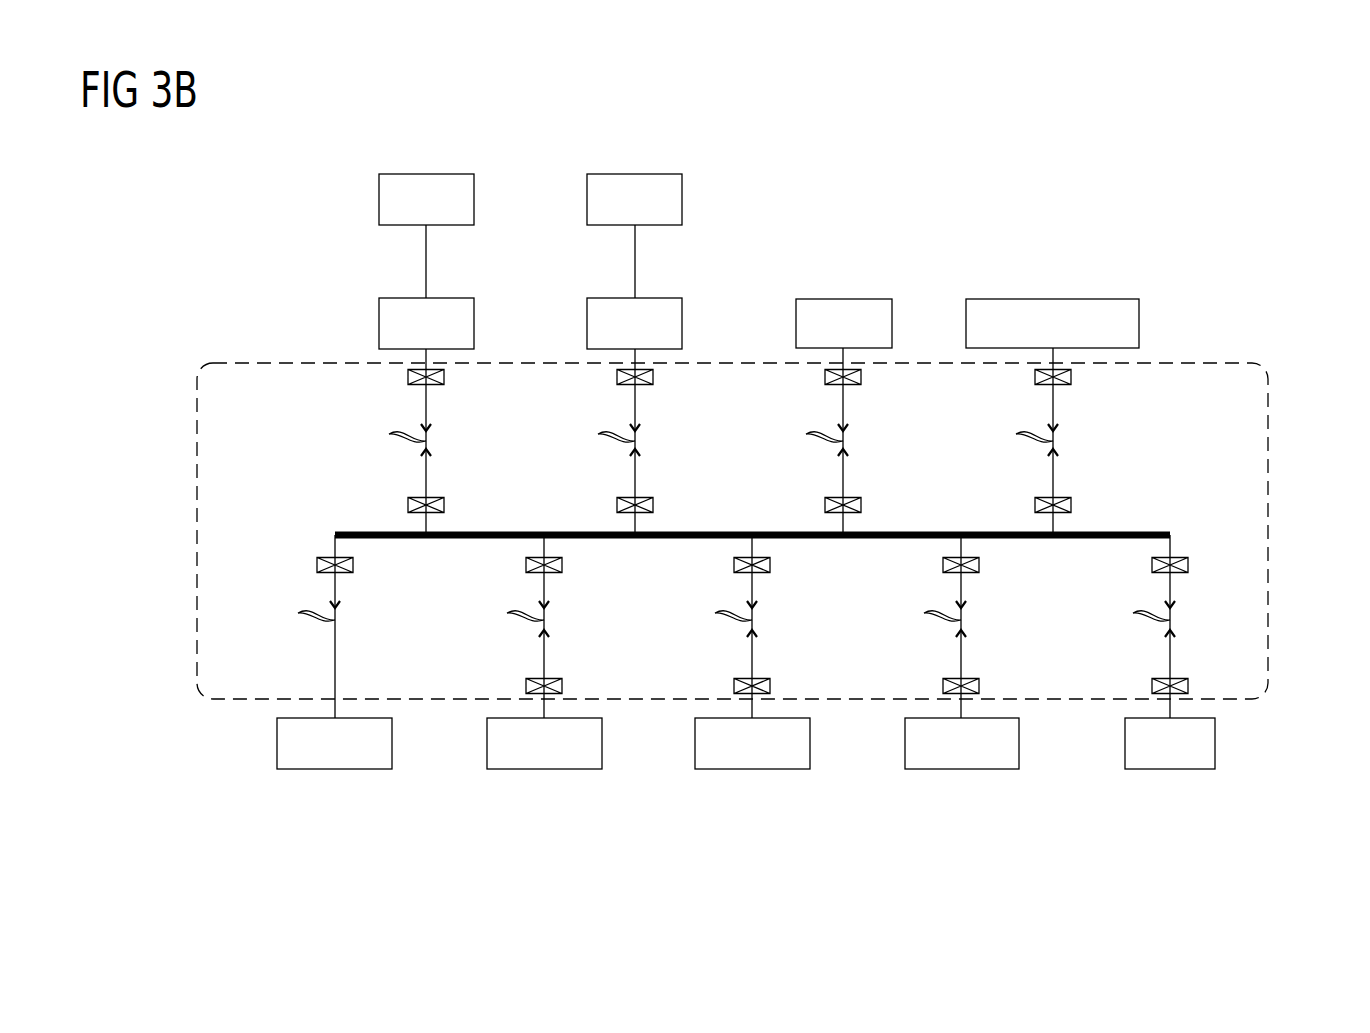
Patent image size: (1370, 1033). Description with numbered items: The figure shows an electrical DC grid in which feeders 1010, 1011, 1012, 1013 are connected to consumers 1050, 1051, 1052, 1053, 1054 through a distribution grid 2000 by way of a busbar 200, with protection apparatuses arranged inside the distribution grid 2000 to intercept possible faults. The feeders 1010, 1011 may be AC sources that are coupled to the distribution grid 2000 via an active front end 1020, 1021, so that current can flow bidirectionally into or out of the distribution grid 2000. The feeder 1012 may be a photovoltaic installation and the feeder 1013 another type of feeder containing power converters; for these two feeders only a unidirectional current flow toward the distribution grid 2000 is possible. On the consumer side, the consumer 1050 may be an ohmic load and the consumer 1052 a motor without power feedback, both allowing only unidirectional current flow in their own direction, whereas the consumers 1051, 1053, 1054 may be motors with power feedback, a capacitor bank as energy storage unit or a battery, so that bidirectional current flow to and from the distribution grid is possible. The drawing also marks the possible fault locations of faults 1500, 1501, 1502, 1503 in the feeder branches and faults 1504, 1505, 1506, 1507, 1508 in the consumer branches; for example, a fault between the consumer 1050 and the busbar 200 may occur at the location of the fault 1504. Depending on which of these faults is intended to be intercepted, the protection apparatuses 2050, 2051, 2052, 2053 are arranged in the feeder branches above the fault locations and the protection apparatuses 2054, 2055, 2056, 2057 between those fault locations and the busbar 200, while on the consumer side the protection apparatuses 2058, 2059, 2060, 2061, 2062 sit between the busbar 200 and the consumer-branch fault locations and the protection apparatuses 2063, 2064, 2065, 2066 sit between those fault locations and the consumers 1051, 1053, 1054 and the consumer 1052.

The feeder 1010 is at (456, 174).
The feeder 1011 is at (665, 174).
The feeder 1012 is at (874, 298).
The feeder 1013 is at (1107, 298).
The active front end 1020 is at (456, 298).
The active front end 1021 is at (665, 298).
The consumer 1050 is at (336, 770).
The consumer 1051 is at (545, 770).
The consumer 1052 is at (753, 770).
The consumer 1053 is at (962, 770).
The consumer 1054 is at (1171, 770).
The fault 1500 is at (376, 442).
The fault 1501 is at (585, 442).
The fault 1502 is at (793, 442).
The fault 1503 is at (1003, 442).
The fault 1504 is at (306, 633).
The fault 1505 is at (515, 633).
The fault 1506 is at (723, 633).
The fault 1507 is at (932, 633).
The fault 1508 is at (1141, 633).
The busbar 200 is at (1152, 532).
The distribution grid 2000 is at (1268, 447).
The protection apparatus 2050 is at (408, 375).
The protection apparatus 2051 is at (617, 375).
The protection apparatus 2052 is at (825, 375).
The protection apparatus 2053 is at (1035, 375).
The protection apparatus 2054 is at (408, 507).
The protection apparatus 2055 is at (617, 507).
The protection apparatus 2056 is at (825, 500).
The protection apparatus 2057 is at (1035, 500).
The protection apparatus 2058 is at (317, 566).
The protection apparatus 2059 is at (526, 566).
The protection apparatus 2060 is at (734, 566).
The protection apparatus 2061 is at (943, 566).
The protection apparatus 2062 is at (1152, 566).
The protection apparatus 2063 is at (526, 688).
The protection apparatus 2064 is at (734, 688).
The protection apparatus 2065 is at (943, 688).
The protection apparatus 2066 is at (1152, 688).